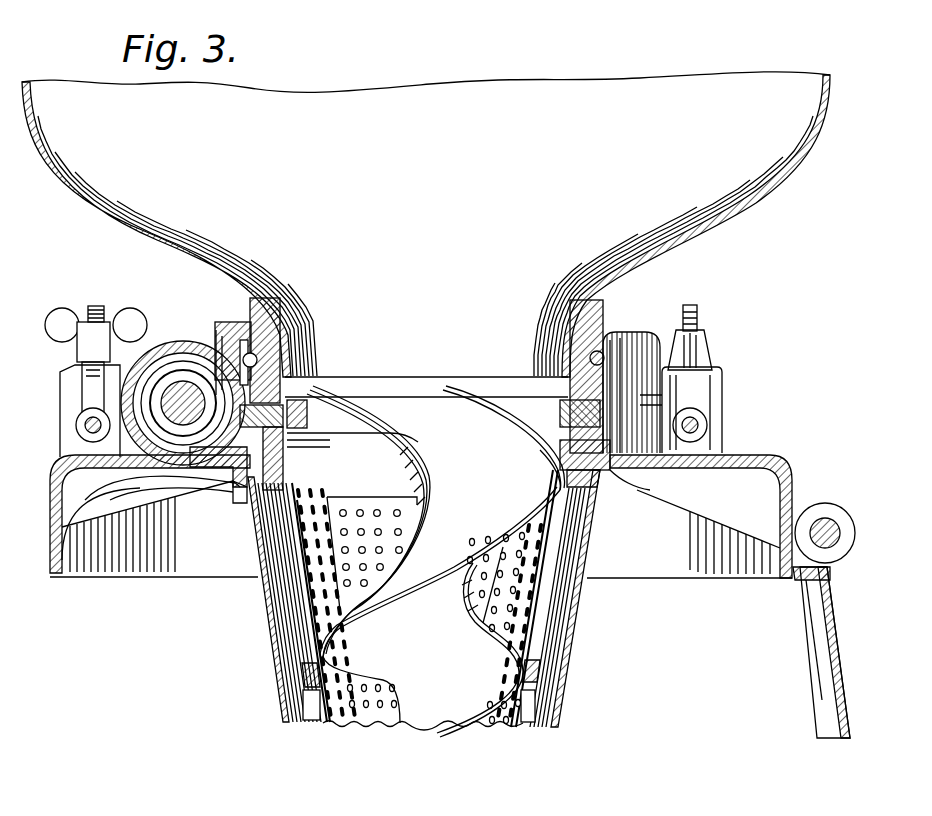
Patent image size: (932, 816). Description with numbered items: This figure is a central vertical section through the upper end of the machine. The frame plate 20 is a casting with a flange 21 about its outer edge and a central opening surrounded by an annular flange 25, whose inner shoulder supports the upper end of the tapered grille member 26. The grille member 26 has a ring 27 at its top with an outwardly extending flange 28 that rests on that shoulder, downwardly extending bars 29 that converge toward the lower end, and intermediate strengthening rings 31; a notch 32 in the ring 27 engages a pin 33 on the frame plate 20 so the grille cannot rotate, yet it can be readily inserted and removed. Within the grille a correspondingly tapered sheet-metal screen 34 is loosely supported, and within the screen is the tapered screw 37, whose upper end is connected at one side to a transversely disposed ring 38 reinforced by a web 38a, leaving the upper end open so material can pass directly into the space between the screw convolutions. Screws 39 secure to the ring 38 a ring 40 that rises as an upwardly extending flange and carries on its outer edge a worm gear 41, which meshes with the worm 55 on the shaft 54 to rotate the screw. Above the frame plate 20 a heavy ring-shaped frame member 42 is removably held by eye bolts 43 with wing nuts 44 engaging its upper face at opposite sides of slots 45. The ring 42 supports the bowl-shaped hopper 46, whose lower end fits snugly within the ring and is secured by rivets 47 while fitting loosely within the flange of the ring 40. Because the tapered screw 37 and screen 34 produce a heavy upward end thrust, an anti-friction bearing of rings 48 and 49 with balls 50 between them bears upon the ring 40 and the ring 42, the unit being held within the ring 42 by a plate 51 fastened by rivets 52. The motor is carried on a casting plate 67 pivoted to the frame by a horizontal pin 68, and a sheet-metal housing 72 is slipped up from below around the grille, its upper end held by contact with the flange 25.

The frame plate 20 is at (178, 470).
The flange 21 is at (52, 570).
The flange 25 is at (235, 490).
The grille member 26 is at (565, 600).
The ring 27 is at (580, 485).
The flange 28 is at (637, 475).
The bars 29 is at (310, 722).
The strengthening rings 31 is at (548, 682).
The notch 32 is at (300, 445).
The pin 33 is at (292, 462).
The screen 34 is at (419, 491).
The screw 37 is at (433, 726).
The ring 38 is at (292, 423).
The web 38a is at (560, 445).
The screws 39 is at (285, 385).
The ring 40 is at (446, 378).
The worm gear 41 is at (700, 395).
The frame member 42 is at (590, 320).
The eye bolts 43 is at (94, 320).
The wing nuts 44 is at (80, 345).
The slots 45 is at (65, 385).
The hopper 46 is at (758, 208).
The rivets 47 is at (282, 300).
The ring 48 is at (260, 355).
The ring 49 is at (233, 380).
The balls 50 is at (242, 335).
The plate 51 is at (180, 363).
The rivets 52 is at (643, 371).
The shaft 54 is at (90, 478).
The worm 55 is at (110, 498).
The plate 67 is at (848, 680).
The pin 68 is at (842, 533).
The housing 72 is at (280, 690).